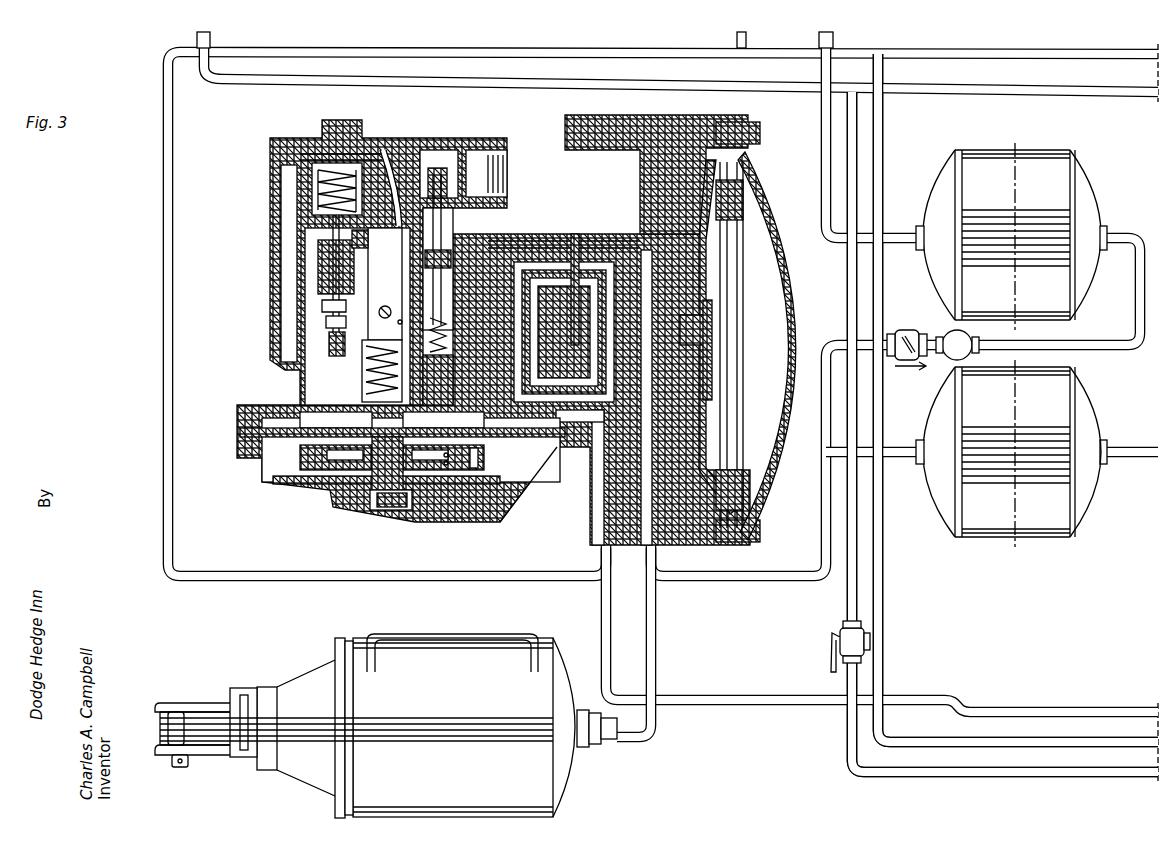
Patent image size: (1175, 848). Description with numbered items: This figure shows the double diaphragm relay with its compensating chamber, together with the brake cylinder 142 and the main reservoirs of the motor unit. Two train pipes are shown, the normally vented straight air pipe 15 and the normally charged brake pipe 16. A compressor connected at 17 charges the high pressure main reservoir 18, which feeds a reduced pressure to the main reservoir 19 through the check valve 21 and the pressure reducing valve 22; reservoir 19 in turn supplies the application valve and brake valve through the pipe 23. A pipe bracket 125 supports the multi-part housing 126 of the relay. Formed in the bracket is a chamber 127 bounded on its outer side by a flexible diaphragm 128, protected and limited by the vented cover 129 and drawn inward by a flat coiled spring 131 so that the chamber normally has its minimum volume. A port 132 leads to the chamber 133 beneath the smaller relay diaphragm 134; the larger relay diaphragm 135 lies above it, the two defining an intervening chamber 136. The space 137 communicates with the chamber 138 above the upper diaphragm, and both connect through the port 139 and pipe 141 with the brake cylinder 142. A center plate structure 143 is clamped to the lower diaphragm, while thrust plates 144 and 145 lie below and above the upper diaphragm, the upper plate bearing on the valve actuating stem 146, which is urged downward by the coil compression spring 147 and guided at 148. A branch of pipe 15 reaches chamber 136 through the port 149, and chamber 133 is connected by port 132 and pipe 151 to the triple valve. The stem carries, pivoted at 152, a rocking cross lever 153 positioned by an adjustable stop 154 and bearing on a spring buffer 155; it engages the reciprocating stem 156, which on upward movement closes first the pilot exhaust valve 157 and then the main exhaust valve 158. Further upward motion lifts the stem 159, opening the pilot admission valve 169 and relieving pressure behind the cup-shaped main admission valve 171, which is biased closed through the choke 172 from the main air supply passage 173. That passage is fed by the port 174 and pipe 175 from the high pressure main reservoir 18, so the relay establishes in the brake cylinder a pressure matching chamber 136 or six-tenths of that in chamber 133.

The straight air pipe 15 is at (737, 40).
The brake pipe 16 is at (210, 40).
The compressor connection 17 is at (1121, 456).
The high pressure main reservoir 18 is at (1079, 392).
The main reservoir 19 is at (1076, 177).
The check valve 21 is at (906, 329).
The pressure reducing valve 22 is at (972, 335).
The pipe 23 is at (833, 40).
The pipe bracket 125 is at (638, 112).
The housing 126 is at (580, 250).
The chamber 127 is at (705, 197).
The flexible diaphragm 128 is at (708, 238).
The cover 129 is at (795, 274).
The flat coiled spring 131 is at (702, 372).
The port 132 is at (594, 487).
The chamber 133 is at (392, 510).
The relay diaphragm 134 is at (336, 486).
The relay diaphragm 135 is at (300, 470).
The chamber 136 is at (320, 485).
The space 137 is at (326, 322).
The chamber 138 is at (312, 418).
The port 139 is at (546, 250).
The pipe 141 is at (657, 633).
The brake cylinder 142 is at (451, 660).
The center plate structure 143 is at (356, 497).
The thrust plate 144 is at (478, 478).
The thrust plate 145 is at (440, 482).
The valve actuating stem 146 is at (357, 316).
The coil compression spring 147 is at (386, 369).
The guide 148 is at (390, 200).
The port 149 is at (515, 497).
The pipe 151 is at (604, 556).
The pivot 152 is at (350, 289).
The rocking cross lever 153 is at (322, 306).
The adjustable stop 154 is at (329, 340).
The spring buffer 155 is at (447, 322).
The stem 156 is at (458, 247).
The pilot exhaust valve 157 is at (445, 235).
The main exhaust valve 158 is at (462, 236).
The stem 159 is at (335, 257).
The pilot admission valve 169 is at (303, 214).
The main admission valve 171 is at (322, 181).
The choke 172 is at (277, 156).
The main air supply passage 173 is at (289, 198).
The port 174 is at (608, 283).
The pipe 175 is at (712, 569).